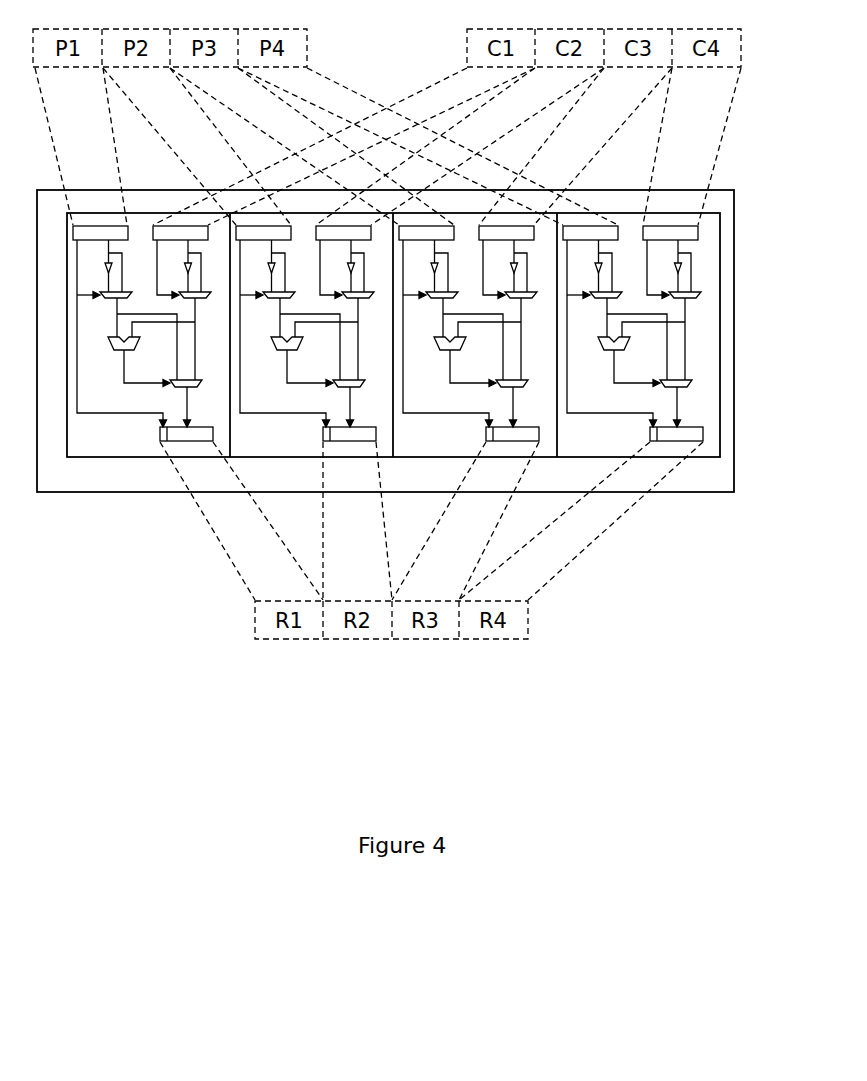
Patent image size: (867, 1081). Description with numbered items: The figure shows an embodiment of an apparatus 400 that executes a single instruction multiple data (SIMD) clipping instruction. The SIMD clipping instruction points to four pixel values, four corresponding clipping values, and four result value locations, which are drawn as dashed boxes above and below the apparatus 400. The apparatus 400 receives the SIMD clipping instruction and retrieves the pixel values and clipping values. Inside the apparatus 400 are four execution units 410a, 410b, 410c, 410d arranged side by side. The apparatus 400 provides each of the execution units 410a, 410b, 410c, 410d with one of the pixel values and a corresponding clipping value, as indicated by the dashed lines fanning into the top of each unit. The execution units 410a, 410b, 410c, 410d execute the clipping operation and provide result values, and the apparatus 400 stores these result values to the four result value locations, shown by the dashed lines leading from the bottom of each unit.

The apparatus 400 is at (733, 342).
The execution unit 410a is at (148, 457).
The execution unit 410b is at (262, 457).
The execution unit 410c is at (513, 457).
The execution unit 410d is at (637, 457).